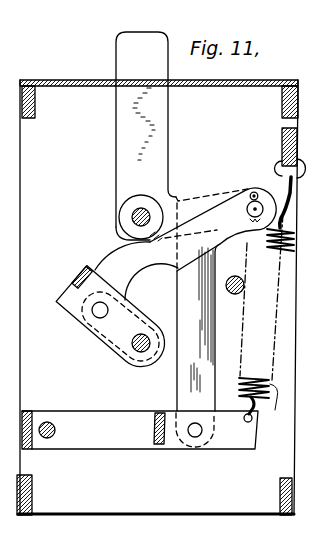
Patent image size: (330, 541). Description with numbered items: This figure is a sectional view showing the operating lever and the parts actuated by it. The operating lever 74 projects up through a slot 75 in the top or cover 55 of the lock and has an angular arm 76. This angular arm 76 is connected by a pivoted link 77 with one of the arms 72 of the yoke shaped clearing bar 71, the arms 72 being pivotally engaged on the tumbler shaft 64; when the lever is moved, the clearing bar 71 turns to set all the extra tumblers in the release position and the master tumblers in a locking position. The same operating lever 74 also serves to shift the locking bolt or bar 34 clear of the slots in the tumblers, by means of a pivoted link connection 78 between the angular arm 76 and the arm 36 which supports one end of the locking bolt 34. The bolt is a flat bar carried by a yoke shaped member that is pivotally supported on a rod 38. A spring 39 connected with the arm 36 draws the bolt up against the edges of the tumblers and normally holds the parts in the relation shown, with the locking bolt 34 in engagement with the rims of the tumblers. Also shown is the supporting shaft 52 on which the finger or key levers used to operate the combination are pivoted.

The top or cover 55 is at (52, 79).
The operating lever 74 is at (128, 52).
The slot 75 is at (200, 87).
The angular arm 76 is at (213, 190).
The supporting shaft 52 is at (133, 218).
The clearing bar 71 is at (80, 277).
The pivoted link 77 is at (157, 266).
The arms 72 is at (107, 337).
The tumbler shaft 64 is at (132, 357).
The pivoted link connection 78 is at (207, 328).
The spring 39 is at (254, 419).
The rod 38 is at (48, 440).
The locking bolt or bar 34 is at (153, 448).
The arm 36 is at (243, 450).